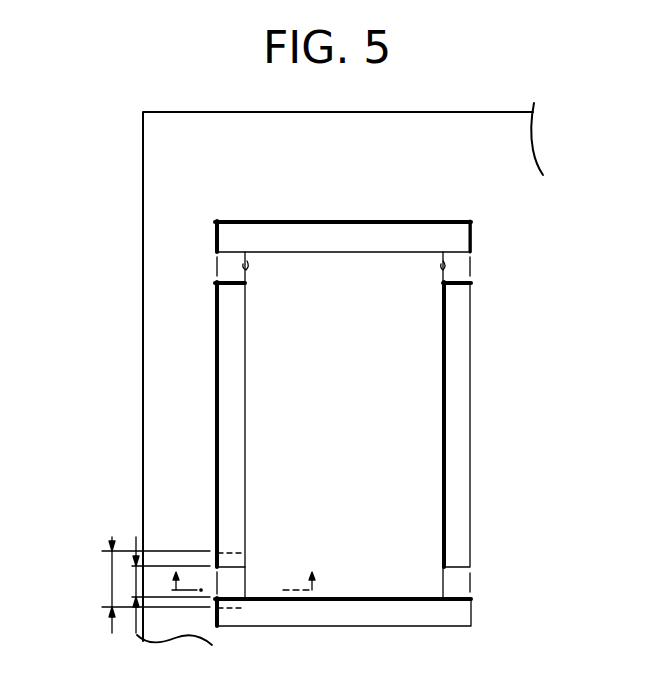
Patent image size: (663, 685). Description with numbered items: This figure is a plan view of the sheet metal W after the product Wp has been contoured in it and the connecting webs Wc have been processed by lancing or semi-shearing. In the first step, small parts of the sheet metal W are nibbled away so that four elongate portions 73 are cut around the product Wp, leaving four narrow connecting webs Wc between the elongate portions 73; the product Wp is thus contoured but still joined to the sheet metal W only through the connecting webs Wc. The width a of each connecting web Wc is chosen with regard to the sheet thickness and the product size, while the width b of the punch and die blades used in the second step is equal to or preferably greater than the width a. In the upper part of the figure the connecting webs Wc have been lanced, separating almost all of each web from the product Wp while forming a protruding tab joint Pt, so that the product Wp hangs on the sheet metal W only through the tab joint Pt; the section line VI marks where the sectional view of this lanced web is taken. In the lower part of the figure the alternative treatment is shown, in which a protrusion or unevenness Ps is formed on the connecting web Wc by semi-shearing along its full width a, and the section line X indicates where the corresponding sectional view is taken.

The elongate portions 73 is at (326, 233).
The sheet metal W is at (188, 431).
The product WP is at (343, 431).
The connecting web Wc is at (495, 583).
The protruding tab joint Pt is at (246, 268).
The protrusion or unevenness Ps is at (243, 583).
The section line VI is at (255, 284).
The width of connecting web a is at (163, 585).
The width of blades b is at (151, 585).
The section line X is at (244, 585).